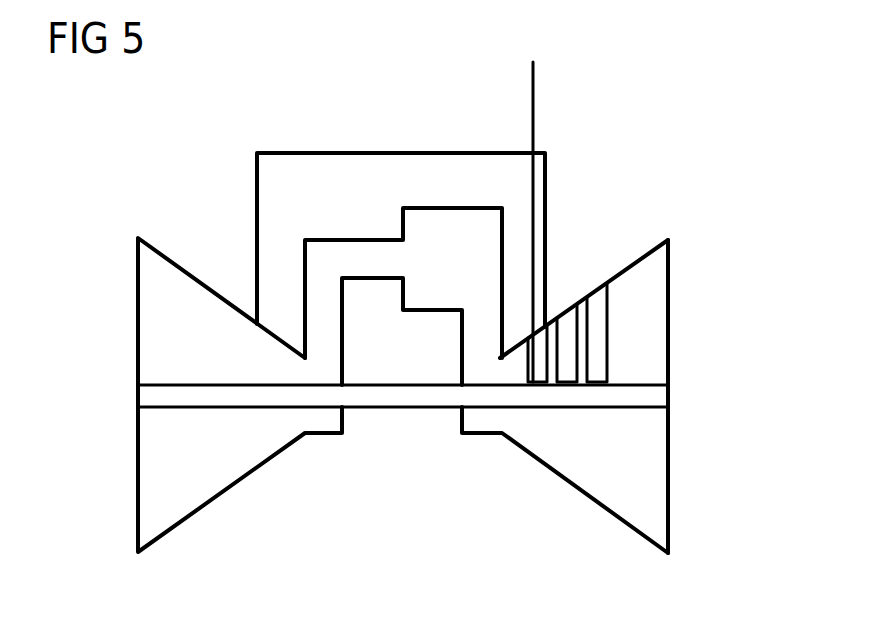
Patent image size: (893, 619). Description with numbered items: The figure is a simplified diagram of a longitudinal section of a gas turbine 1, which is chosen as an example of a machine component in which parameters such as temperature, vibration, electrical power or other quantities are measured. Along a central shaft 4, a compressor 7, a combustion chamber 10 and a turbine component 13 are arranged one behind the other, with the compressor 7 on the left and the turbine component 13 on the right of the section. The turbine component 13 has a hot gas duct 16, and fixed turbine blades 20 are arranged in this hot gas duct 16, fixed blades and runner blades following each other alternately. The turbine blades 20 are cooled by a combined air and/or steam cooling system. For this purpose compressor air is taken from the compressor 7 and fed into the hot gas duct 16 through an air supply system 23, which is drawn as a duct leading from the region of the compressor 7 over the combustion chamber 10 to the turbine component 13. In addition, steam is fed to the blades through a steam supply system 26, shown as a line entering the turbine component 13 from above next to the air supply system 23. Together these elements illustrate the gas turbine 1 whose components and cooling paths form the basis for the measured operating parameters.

The gas turbine 1 is at (685, 138).
The shaft 4 is at (153, 395).
The compressor 7 is at (171, 260).
The combustion chamber 10 is at (403, 216).
The turbine component 13 is at (644, 255).
The hot gas duct 16 is at (658, 332).
The fixed turbine blades 20 is at (538, 370).
The air supply system 23 is at (546, 166).
The steam supply system 26 is at (533, 108).